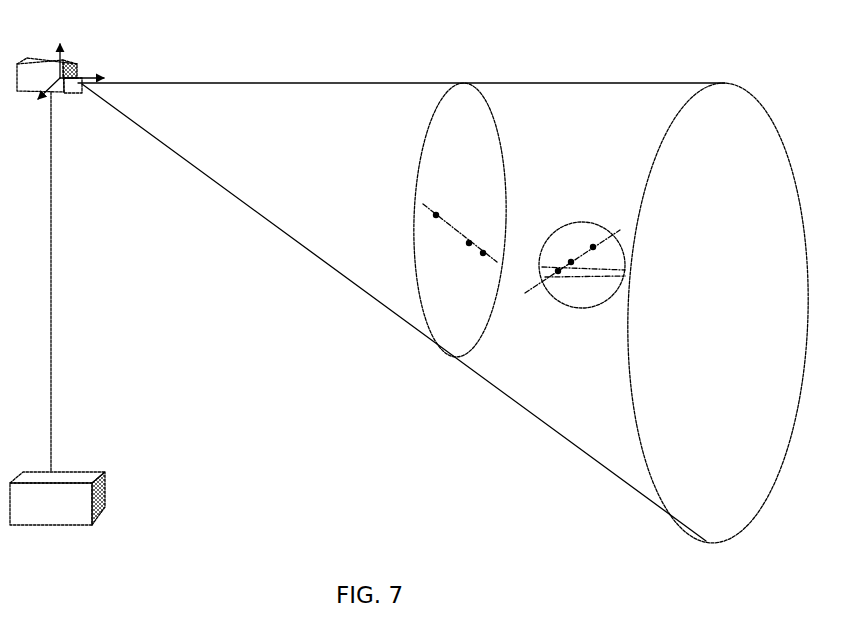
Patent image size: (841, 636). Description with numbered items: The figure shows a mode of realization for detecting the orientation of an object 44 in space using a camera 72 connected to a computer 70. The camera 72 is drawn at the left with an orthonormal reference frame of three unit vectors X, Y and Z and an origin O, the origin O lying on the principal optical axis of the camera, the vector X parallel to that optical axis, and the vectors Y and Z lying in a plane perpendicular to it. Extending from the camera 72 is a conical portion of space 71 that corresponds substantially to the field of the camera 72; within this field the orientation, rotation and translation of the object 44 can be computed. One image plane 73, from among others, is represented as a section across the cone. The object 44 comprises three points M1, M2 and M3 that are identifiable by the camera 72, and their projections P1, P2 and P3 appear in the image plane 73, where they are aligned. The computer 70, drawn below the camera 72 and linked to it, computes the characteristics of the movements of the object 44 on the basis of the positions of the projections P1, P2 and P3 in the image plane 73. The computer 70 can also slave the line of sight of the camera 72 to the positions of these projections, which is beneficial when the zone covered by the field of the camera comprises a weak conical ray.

The computer 70 is at (103, 508).
The portion of space 71 is at (613, 104).
The camera 72 is at (75, 60).
The image plane 73 is at (468, 96).
The object 44 is at (573, 289).
The projection of point M1 P1 is at (436, 213).
The projection of point M2 P2 is at (469, 242).
The projection of point M3 P3 is at (483, 252).
The point M1 is at (593, 246).
The point M2 is at (571, 262).
The point M3 is at (558, 271).